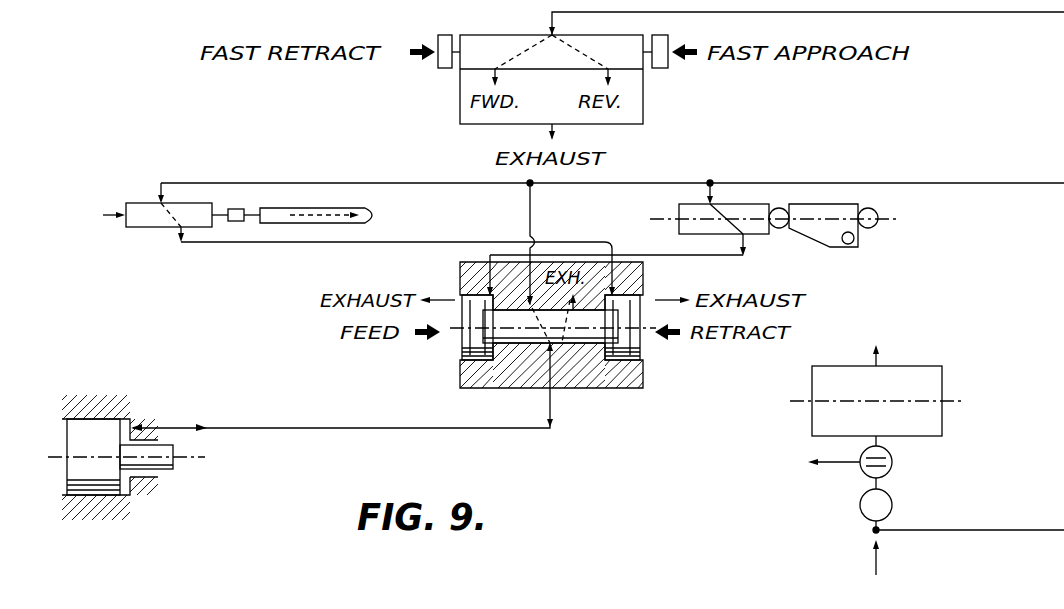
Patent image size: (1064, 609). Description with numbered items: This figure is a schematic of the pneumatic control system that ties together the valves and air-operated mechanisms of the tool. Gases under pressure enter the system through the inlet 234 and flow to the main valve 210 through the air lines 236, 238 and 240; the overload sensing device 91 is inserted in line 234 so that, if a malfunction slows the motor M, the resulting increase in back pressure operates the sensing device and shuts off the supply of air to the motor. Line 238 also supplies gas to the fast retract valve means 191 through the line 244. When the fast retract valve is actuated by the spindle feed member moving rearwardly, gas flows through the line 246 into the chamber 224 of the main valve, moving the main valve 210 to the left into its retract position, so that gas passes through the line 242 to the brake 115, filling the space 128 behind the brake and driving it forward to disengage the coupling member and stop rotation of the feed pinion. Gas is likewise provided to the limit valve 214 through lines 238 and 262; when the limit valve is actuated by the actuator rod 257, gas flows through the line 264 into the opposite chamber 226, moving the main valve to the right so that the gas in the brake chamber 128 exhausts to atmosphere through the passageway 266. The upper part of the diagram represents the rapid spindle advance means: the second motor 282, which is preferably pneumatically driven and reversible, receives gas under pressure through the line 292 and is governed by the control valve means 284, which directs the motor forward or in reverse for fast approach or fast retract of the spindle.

The control valve means 284 is at (502, 41).
The line 292 is at (1016, 13).
The second motor 282 is at (640, 115).
The line 262 is at (160, 198).
The limit valve 214 is at (137, 215).
The actuator rod 257 is at (365, 206).
The line 264 is at (253, 243).
The air line 240 is at (530, 219).
The fast retract valve means 191 is at (675, 206).
The line 246 is at (641, 254).
The line 244 is at (714, 185).
The air line 238 is at (991, 182).
The main valve 210 is at (650, 293).
The chamber 226 is at (553, 326).
The passageway 266 is at (560, 346).
The chamber 224 is at (495, 360).
The line 242 is at (553, 405).
The brake 115 is at (97, 447).
The space 128 is at (127, 497).
The motor M is at (946, 383).
The overload sensing device 91 is at (893, 465).
The air line 236 is at (1007, 523).
The inlet 234 is at (874, 556).